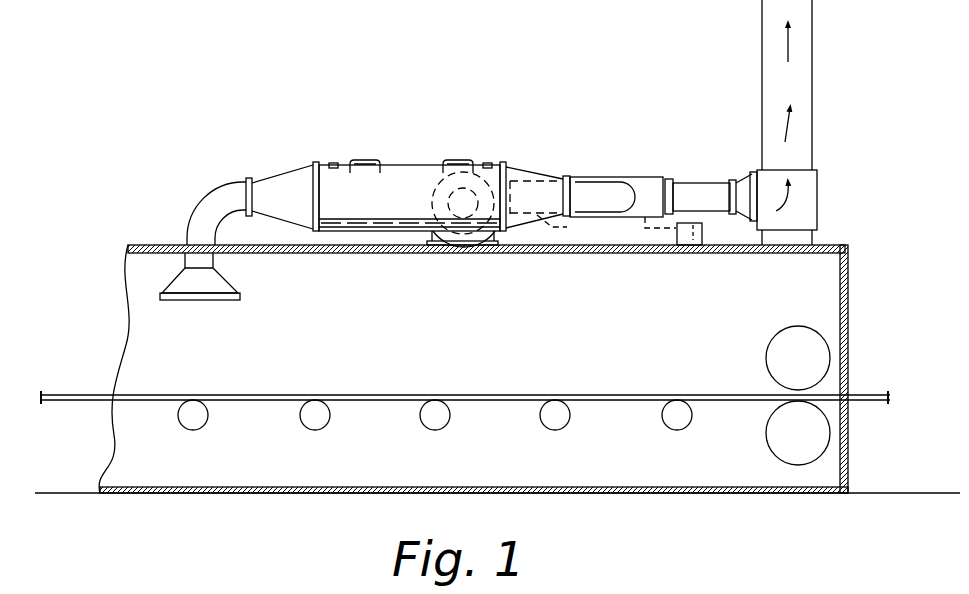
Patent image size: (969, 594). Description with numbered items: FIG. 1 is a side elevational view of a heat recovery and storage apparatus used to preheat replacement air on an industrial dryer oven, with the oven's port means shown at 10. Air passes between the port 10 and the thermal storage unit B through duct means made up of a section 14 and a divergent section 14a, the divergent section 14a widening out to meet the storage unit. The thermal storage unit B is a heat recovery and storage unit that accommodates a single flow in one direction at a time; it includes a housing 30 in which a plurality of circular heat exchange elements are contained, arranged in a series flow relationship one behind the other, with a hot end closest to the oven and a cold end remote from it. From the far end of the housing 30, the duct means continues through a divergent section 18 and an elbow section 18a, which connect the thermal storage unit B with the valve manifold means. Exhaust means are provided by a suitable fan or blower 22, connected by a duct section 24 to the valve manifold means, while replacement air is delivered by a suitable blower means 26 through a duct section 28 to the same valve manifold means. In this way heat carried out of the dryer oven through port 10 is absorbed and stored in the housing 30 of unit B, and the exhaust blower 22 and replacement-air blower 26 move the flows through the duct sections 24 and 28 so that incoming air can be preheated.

The first port means 10 is at (187, 245).
The duct section 14 is at (245, 186).
The divergent section 14a is at (280, 173).
The housing 30 is at (402, 165).
The blower means 26 is at (438, 176).
The thermal storage unit B is at (480, 165).
The divergent section 18 is at (520, 166).
The elbow section 18a is at (620, 140).
The duct section 24 is at (700, 183).
The fan or blower 22 is at (817, 180).
The duct section 28 is at (619, 230).